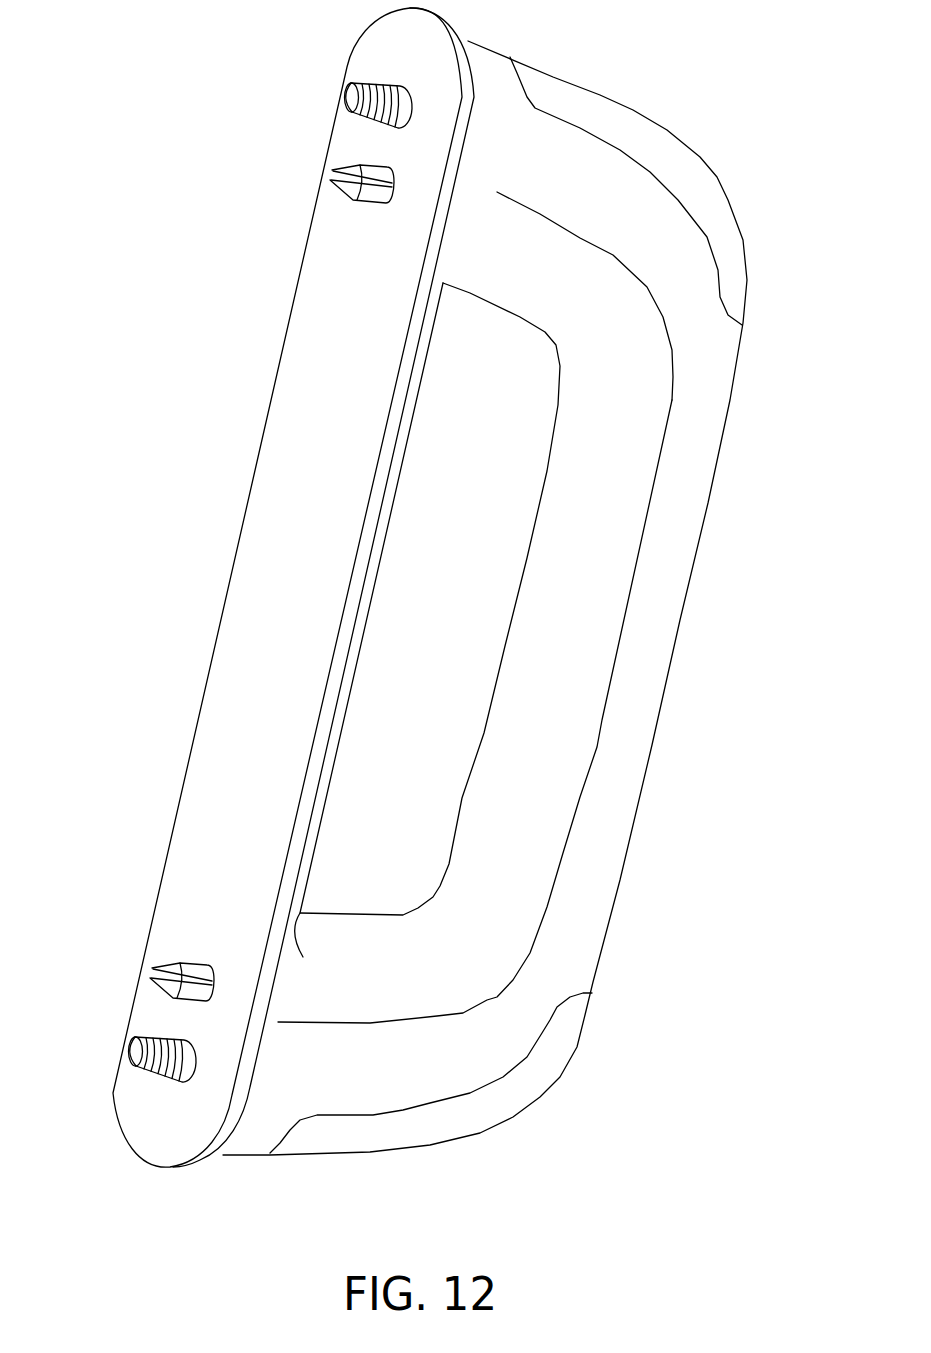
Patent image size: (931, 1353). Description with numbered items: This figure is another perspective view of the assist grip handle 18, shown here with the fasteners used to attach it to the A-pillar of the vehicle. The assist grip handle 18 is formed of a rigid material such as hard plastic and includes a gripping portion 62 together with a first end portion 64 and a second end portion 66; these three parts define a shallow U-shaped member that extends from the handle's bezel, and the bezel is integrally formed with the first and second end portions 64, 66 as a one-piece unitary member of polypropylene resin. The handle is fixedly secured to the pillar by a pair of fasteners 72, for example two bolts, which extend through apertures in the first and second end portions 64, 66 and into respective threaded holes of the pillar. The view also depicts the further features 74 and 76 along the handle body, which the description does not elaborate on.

The assist grip handle 18 is at (714, 504).
The gripping portion 62 is at (642, 678).
The first end portion 64 is at (510, 250).
The second end portion 66 is at (360, 963).
The fasteners 72 is at (357, 83).
The upper lip 74 is at (620, 124).
The lower lip 76 is at (480, 1108).